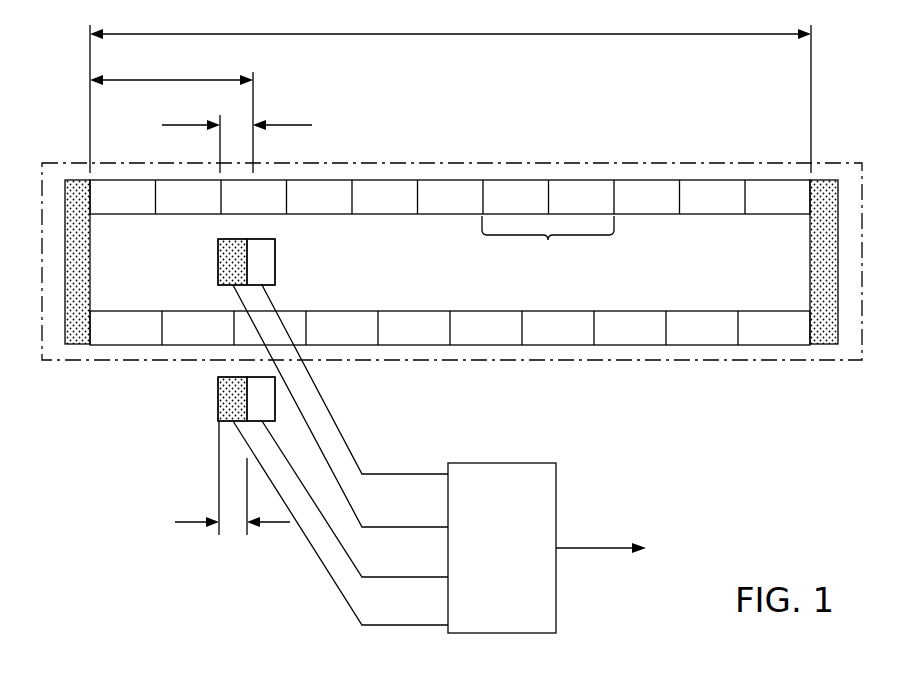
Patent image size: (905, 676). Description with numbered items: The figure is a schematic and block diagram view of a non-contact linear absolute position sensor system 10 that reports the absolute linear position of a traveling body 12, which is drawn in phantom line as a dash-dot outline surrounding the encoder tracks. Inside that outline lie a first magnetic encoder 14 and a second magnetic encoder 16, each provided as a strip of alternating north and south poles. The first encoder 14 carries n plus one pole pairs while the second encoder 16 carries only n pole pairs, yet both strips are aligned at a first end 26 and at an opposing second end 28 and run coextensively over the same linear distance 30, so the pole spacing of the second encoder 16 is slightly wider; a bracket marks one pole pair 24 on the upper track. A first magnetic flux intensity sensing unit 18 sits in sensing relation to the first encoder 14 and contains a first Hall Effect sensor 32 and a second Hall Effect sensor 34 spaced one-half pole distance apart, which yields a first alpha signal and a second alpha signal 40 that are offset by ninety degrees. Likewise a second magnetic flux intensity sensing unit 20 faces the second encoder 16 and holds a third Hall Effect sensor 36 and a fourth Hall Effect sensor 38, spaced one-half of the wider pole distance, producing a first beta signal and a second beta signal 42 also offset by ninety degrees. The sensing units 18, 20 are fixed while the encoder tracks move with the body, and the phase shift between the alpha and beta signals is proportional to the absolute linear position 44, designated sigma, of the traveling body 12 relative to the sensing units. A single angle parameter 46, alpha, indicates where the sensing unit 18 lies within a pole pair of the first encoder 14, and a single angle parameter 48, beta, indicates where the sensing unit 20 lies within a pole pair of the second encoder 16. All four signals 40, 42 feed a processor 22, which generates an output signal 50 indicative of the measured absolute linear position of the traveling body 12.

The sensor system 10 is at (120, 477).
The traveling body 12 is at (115, 360).
The first magnetic encoder 14 is at (102, 198).
The second magnetic encoder 16 is at (102, 322).
The first magnetic flux intensity sensing unit 18 is at (300, 253).
The second magnetic flux intensity sensing unit 20 is at (200, 423).
The processor 22 is at (530, 606).
The magnetic pole pair 24 is at (548, 246).
The first end 26 is at (78, 166).
The second end 28 is at (793, 372).
The linear distance 30 is at (607, 35).
The first Hall Effect sensor 32 is at (272, 245).
The second Hall Effect sensor 34 is at (225, 243).
The third Hall Effect sensor 36 is at (255, 388).
The fourth Hall Effect sensor 38 is at (222, 395).
The alpha linear position signals 40 is at (334, 415).
The beta linear position signals 42 is at (317, 507).
The absolute linear position 44 is at (225, 78).
The single angle parameter alpha 46 is at (221, 117).
The single angle parameter beta 48 is at (222, 520).
The output signal 50 is at (597, 548).